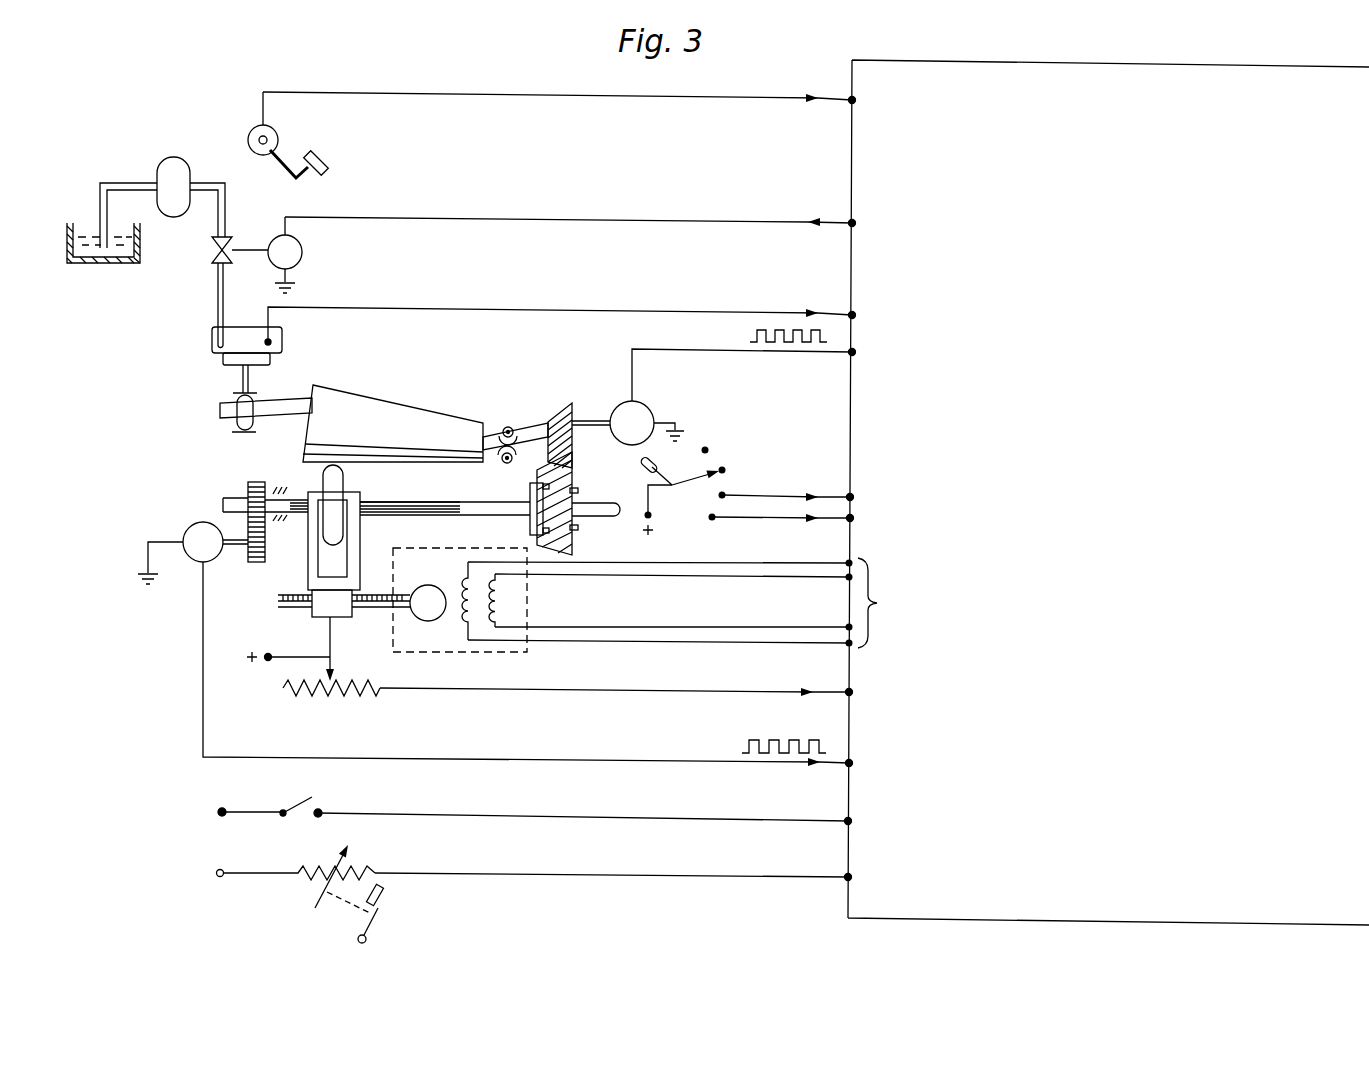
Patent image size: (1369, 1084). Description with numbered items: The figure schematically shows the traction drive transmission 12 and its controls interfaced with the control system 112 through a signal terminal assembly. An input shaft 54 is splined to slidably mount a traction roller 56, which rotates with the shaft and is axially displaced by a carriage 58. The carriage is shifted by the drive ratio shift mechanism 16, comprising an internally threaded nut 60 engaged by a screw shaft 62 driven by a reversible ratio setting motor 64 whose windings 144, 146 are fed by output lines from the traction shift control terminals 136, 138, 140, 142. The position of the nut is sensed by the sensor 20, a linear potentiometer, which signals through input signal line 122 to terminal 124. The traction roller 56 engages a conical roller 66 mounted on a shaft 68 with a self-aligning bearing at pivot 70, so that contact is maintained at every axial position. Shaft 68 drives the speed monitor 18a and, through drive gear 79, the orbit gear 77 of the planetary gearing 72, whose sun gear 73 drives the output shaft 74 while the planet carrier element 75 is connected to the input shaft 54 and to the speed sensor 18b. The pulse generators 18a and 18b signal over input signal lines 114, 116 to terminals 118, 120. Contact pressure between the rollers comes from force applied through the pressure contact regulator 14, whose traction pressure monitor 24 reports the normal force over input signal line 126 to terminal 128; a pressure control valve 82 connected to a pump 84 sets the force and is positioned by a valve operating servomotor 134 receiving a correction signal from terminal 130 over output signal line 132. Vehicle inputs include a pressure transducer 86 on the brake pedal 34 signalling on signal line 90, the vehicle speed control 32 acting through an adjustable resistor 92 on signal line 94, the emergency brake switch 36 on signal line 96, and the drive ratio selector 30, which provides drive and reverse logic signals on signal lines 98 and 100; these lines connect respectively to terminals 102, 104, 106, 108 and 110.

The transmission 12 is at (205, 455).
The pressure contact regulator 14 is at (170, 327).
The drive ratio shift mechanism 16 is at (240, 638).
The speed monitor 18a is at (648, 410).
The speed sensor 18b is at (185, 533).
The sensor 20 is at (290, 686).
The traction pressure monitor 24 is at (196, 367).
The drive ratio selector 30 is at (678, 548).
The vehicle speed control 32 is at (385, 893).
The brake pedal 34 is at (318, 150).
The emergency brake switch 36 is at (297, 803).
The input shaft 54 is at (232, 502).
The traction roller 56 is at (335, 483).
The carriage 58 is at (310, 553).
The internally threaded nut 60 is at (322, 606).
The screw shaft 62 is at (373, 610).
The ratio setting motor 64 is at (495, 661).
The conical roller 66 is at (443, 423).
The shaft 68 is at (288, 418).
The pivot 70 is at (518, 423).
The planetary gearing 72 is at (512, 529).
The sun gear 73 is at (573, 505).
The output shaft 74 is at (592, 512).
The planet carrier element 75 is at (530, 495).
The orbit gear 77 is at (575, 475).
The drive gear 79 is at (579, 417).
The pressure control valve 82 is at (213, 257).
The pump 84 is at (168, 165).
The pressure transducer 86 is at (250, 130).
The signal line 90 is at (610, 98).
The adjustable resistor 92 is at (300, 885).
The signal line 94 is at (580, 876).
The signal line 96 is at (648, 822).
The signal line 98 is at (780, 492).
The signal line 100 is at (756, 519).
The terminal 102 is at (850, 103).
The terminal 104 is at (843, 880).
The terminal 106 is at (843, 823).
The terminal 108 is at (852, 494).
The terminal 110 is at (855, 521).
The control system 112 is at (838, 910).
The input signal line 114 is at (698, 346).
The input signal line 116 is at (518, 762).
The terminal 118 is at (850, 353).
The terminal 120 is at (845, 767).
The input signal line 122 is at (618, 692).
The terminal 124 is at (845, 695).
The input signal line 126 is at (480, 313).
The terminal 128 is at (850, 311).
The terminal 130 is at (848, 218).
The output signal line 132 is at (672, 218).
The valve operating servomotor 134 is at (303, 252).
The traction shift control terminal 136 is at (868, 563).
The traction shift control terminal 138 is at (845, 580).
The traction shift control terminal 140 is at (856, 628).
The traction shift control terminal 142 is at (845, 645).
The winding 144 is at (455, 583).
The winding 146 is at (500, 600).